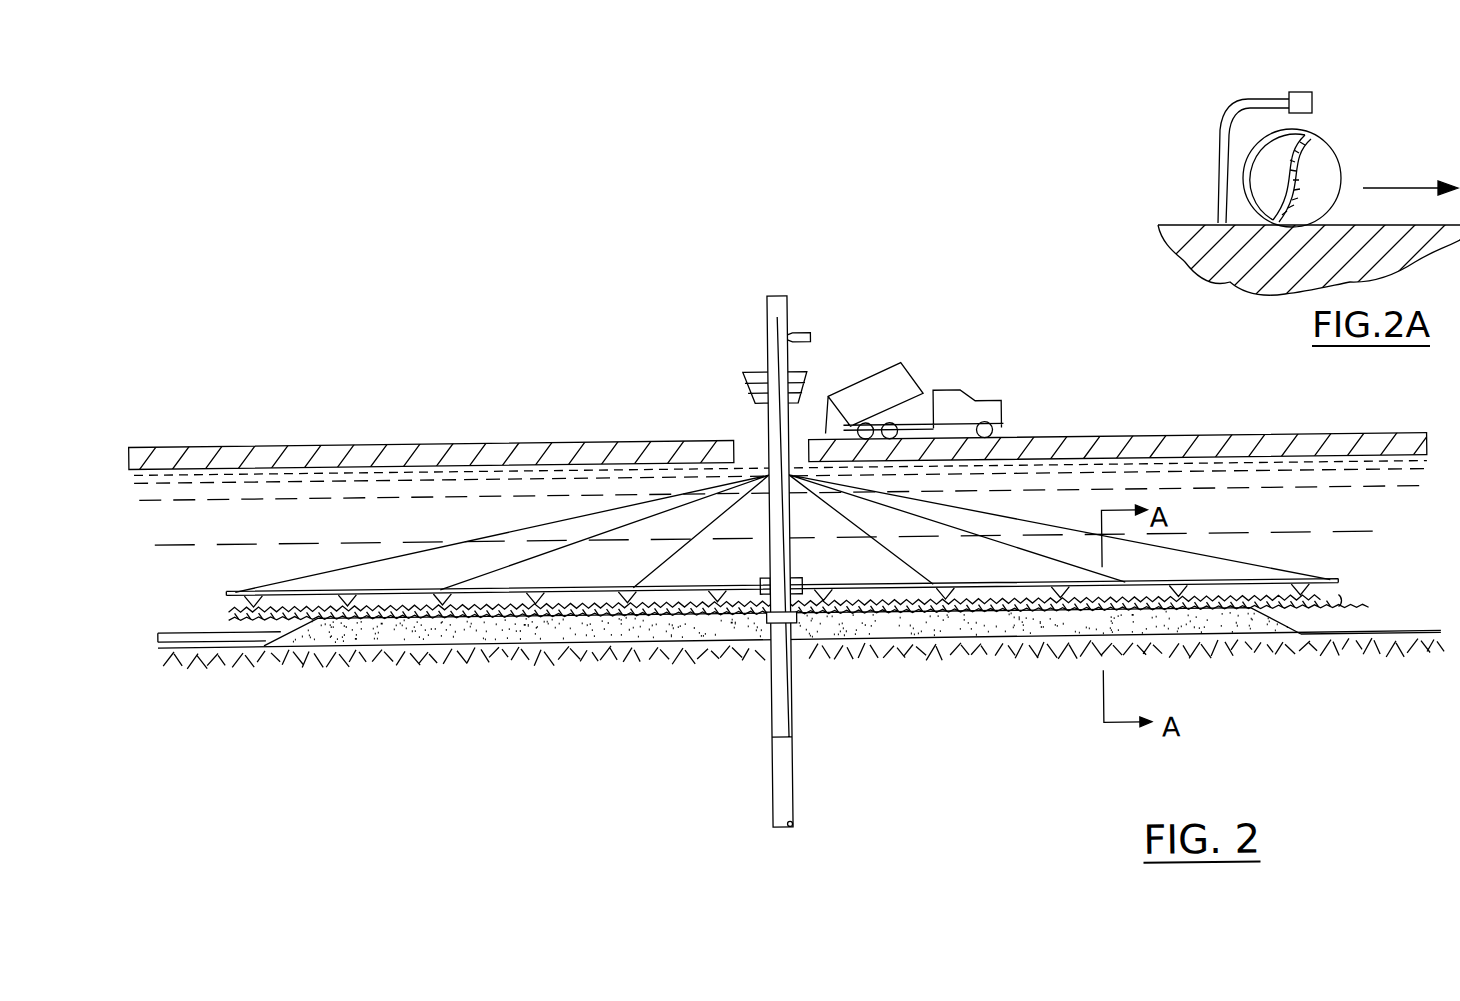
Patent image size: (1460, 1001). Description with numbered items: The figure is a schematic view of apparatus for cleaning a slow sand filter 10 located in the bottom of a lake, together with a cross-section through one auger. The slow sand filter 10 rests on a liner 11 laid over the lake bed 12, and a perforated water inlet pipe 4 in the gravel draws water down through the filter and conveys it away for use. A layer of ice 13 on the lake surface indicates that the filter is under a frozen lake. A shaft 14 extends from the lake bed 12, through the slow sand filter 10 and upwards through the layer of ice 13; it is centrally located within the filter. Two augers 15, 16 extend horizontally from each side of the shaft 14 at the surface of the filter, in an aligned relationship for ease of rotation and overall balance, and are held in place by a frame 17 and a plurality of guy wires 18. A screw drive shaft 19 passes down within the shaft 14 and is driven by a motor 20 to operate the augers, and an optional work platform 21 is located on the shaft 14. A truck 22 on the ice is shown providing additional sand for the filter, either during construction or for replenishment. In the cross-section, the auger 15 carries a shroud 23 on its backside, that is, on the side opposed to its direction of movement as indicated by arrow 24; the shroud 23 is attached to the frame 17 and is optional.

In FIG. 2, the perforated water inlet pipe 4 is at (180, 628).
In FIG. 2, the slow sand filter 10 is at (1059, 645).
In FIG. 2A, the slow sand filter 10 is at (1198, 265).
In FIG. 2, the liner 11 is at (1243, 652).
In FIG. 2, the lake bed 12 is at (952, 652).
In FIG. 2, the layer of ice 13 is at (258, 446).
In FIG. 2, the shaft 14 is at (790, 714).
In FIG. 2, the auger 15 is at (1333, 604).
In FIG. 2A, the auger 15 is at (1328, 162).
In FIG. 2, the auger 16 is at (236, 606).
In FIG. 2, the frame 17 is at (700, 588).
In FIG. 2A, the frame 17 is at (1312, 100).
In FIG. 2, the guy wires 18 is at (493, 535).
In FIG. 2, the screw drive shaft 19 is at (760, 339).
In FIG. 2, the motor 20 is at (813, 336).
In FIG. 2, the work platform 21 is at (745, 393).
In FIG. 2, the truck 22 is at (952, 380).
In FIG. 2A, the shroud 23 is at (1213, 140).
In FIG. 2A, the arrow 24 is at (1405, 188).